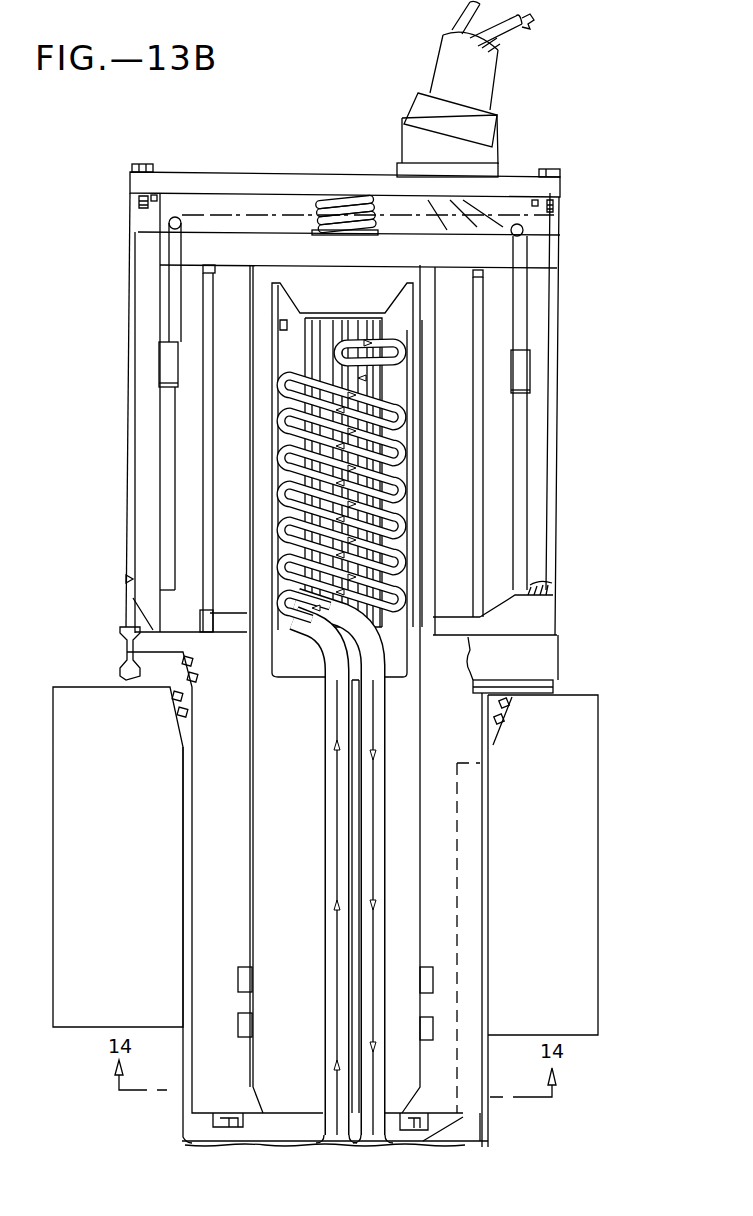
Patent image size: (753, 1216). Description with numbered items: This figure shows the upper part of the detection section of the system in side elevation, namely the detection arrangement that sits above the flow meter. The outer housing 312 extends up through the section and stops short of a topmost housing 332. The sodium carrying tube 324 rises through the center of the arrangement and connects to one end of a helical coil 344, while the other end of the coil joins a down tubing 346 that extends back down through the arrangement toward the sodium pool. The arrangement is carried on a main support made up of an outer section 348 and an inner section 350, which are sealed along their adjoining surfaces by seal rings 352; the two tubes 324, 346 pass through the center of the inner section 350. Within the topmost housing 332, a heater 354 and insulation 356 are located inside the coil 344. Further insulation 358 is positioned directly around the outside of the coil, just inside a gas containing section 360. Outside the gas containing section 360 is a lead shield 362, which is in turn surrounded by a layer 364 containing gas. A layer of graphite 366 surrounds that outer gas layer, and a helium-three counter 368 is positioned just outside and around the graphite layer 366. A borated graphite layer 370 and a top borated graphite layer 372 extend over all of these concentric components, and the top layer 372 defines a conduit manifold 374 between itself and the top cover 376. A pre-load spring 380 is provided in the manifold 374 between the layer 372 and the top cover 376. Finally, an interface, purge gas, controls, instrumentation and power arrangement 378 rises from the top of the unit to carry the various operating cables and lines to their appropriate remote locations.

The outer housing 312 is at (484, 1128).
The sodium carrying tube 324 is at (330, 982).
The topmost housing 332 is at (553, 510).
The coil 344 is at (407, 453).
The down tubing 346 is at (380, 912).
The outer section 348 is at (212, 812).
The inner section 350 is at (278, 892).
The seal rings 352 is at (237, 1020).
The heater 354 is at (448, 492).
The insulation 356 is at (407, 400).
The insulation 358 is at (422, 357).
The gas containing section 360 is at (433, 330).
The lead shield 362 is at (450, 503).
The layer containing gas 364 is at (473, 528).
The layer of graphite 366 is at (498, 570).
The He3 counter 368 is at (518, 552).
The borated graphite layer 370 is at (540, 402).
The top borated graphite layer 372 is at (243, 245).
The conduit manifold 374 is at (193, 204).
The top cover 376 is at (330, 157).
The interface, purge gas, controls, instrumentation and power arrangement 378 is at (487, 127).
The pre-load spring 380 is at (352, 213).